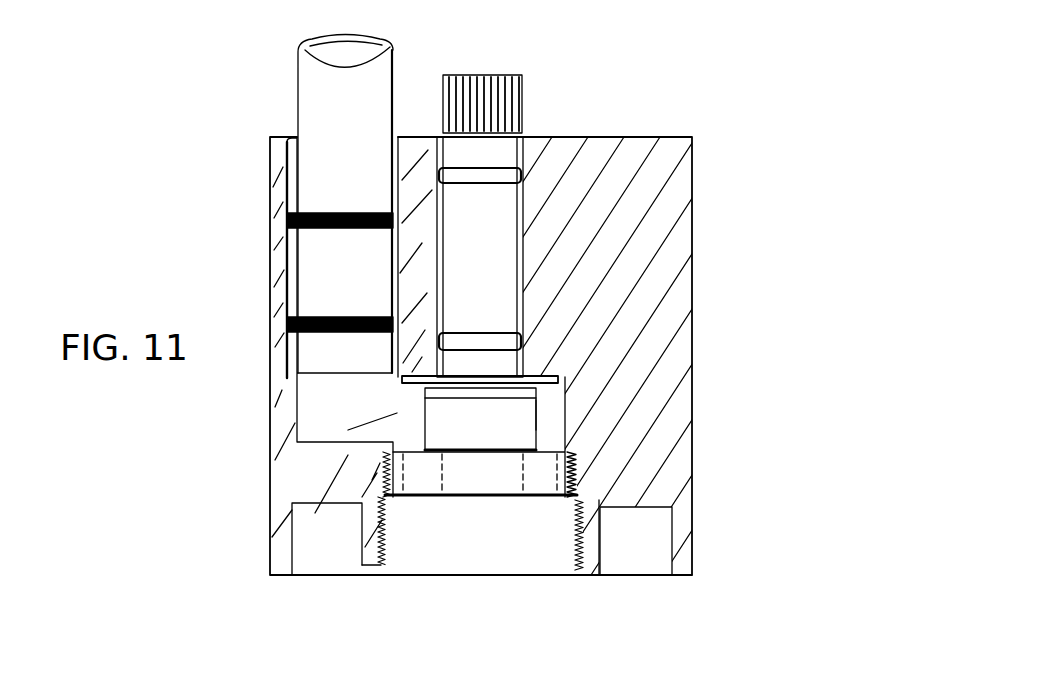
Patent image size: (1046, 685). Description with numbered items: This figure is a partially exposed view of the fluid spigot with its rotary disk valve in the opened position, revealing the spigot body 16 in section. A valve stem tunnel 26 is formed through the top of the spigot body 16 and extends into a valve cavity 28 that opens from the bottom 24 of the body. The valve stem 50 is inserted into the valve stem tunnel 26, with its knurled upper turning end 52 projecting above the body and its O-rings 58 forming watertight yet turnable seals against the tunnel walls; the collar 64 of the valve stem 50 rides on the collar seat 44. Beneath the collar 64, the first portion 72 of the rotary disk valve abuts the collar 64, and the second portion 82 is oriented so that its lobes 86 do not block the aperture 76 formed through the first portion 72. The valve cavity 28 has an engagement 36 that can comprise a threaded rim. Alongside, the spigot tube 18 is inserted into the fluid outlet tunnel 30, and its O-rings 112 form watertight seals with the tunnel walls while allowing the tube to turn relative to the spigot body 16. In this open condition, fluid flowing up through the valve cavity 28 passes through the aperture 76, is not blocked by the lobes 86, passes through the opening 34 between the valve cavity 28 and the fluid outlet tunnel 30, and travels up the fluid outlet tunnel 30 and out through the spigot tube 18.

The spigot body 16 is at (668, 283).
The spigot tube 18 is at (297, 98).
The fluid outlet tunnel 30 is at (287, 185).
The sealing members 112 is at (288, 224).
The upper turning end 52 is at (523, 88).
The valve stem tunnel 26 is at (550, 137).
The valve stem 50 is at (503, 230).
The O-rings 58 is at (512, 178).
The collar seat 44 is at (542, 400).
The second portion 82 is at (536, 432).
The collar 64 is at (536, 412).
The lobes 86 is at (536, 421).
The aperture 76 is at (417, 483).
The first portion 72 is at (483, 487).
The valve cavity 28 is at (517, 561).
The opening 34 is at (365, 435).
The engagement 36 is at (593, 577).
The bottom 24 is at (682, 578).